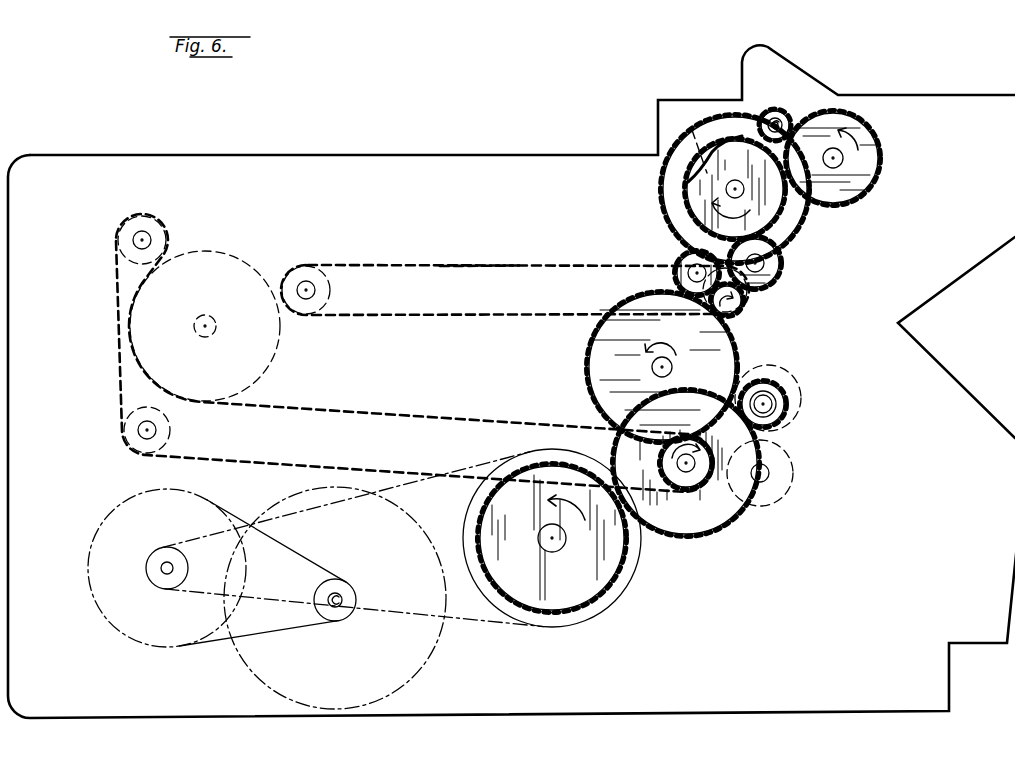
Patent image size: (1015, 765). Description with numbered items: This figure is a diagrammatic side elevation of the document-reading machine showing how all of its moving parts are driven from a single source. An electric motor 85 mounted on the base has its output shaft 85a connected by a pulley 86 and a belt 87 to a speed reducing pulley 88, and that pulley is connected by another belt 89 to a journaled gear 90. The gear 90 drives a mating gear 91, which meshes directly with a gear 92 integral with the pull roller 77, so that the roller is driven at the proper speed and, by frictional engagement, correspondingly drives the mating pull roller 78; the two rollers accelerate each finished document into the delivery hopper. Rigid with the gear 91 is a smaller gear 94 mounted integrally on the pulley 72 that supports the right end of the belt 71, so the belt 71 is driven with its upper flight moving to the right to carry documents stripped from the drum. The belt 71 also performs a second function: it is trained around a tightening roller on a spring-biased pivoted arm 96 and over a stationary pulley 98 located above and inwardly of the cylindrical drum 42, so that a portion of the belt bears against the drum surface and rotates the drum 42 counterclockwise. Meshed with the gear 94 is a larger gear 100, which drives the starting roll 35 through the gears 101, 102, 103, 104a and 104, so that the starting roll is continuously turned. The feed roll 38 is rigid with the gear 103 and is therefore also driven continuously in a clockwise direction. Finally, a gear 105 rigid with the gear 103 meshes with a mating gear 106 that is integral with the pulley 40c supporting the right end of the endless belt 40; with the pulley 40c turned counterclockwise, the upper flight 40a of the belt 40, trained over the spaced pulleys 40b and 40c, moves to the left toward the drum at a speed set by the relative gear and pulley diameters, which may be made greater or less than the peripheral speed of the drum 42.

The starting roll 35 is at (763, 112).
The feed roll 38 is at (699, 133).
The endless belt 40 is at (521, 260).
The upper flight 40a is at (446, 262).
The pulley 40b is at (320, 276).
The pulley 40c is at (748, 314).
The cylindrical drum 42 is at (240, 255).
The belt 71 is at (520, 422).
The pulley 72 is at (696, 490).
The pull roller 77 is at (800, 403).
The pull roller 78 is at (795, 481).
The electric motor 85 is at (430, 666).
The output shaft 85a is at (345, 599).
The pulley 86 is at (348, 615).
The belt 87 is at (272, 628).
The speed reducing pulley 88 is at (120, 522).
The belt 89 is at (480, 617).
The journaled gear 90 is at (615, 560).
The mating gear 91 is at (662, 540).
The gear 92 is at (785, 422).
The gear 94 is at (668, 468).
The pivoted arm 96 is at (170, 430).
The stationary pulley 98 is at (160, 232).
The gear 100 is at (735, 350).
The gear 101 is at (680, 260).
The gear 102 is at (783, 263).
The gear 103 is at (790, 205).
The gear 104 is at (777, 108).
The gear 104a is at (870, 188).
The gear 105 is at (660, 212).
The mating gear 106 is at (746, 306).